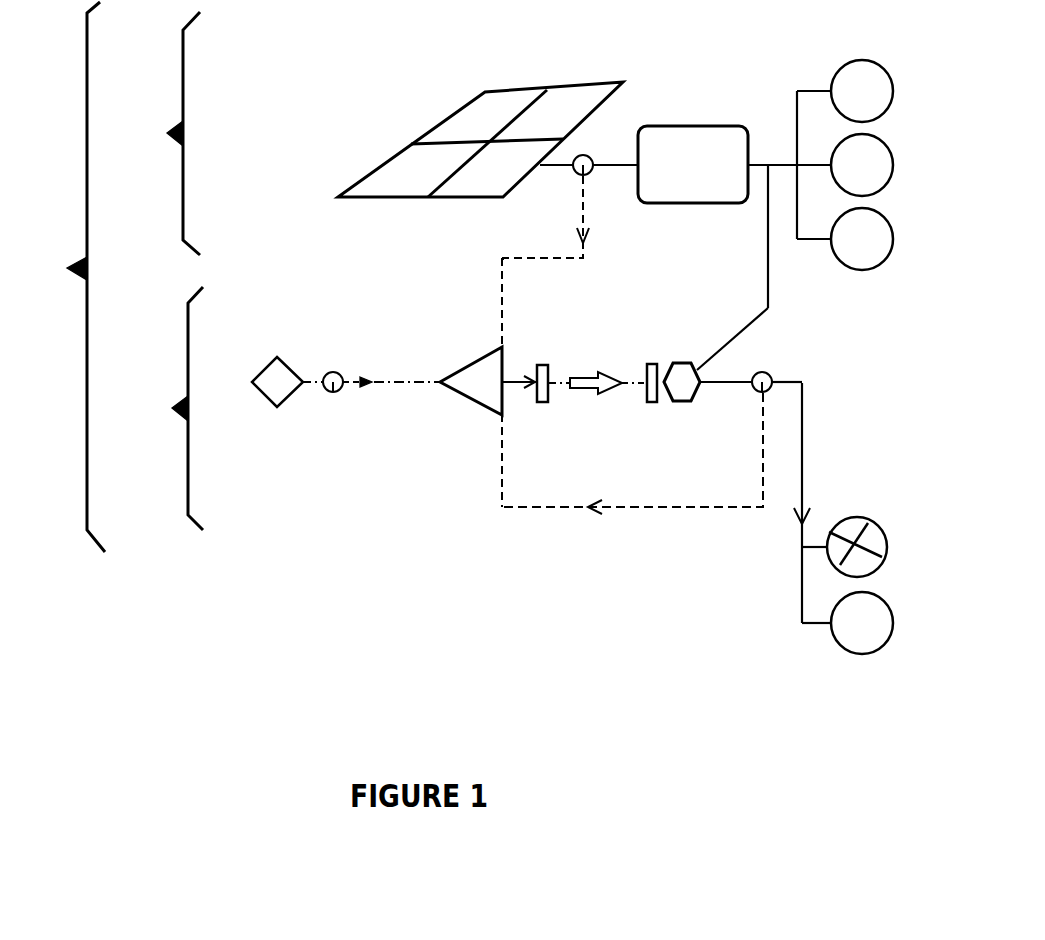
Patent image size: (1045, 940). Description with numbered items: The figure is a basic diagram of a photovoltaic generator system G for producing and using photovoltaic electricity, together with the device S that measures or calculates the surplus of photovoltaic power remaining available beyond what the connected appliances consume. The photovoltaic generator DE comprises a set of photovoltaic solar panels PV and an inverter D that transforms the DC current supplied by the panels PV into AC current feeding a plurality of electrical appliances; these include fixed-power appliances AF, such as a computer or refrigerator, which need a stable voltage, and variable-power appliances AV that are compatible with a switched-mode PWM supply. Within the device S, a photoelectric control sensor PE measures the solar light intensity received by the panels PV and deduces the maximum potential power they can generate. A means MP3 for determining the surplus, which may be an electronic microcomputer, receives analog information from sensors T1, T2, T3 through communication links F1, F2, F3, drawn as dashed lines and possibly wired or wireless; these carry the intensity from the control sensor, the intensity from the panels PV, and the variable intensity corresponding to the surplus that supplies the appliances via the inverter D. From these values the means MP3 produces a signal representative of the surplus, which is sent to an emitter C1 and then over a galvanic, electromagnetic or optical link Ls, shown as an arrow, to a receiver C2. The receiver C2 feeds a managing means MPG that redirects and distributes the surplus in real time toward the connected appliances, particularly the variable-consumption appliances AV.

The photovoltaic generator system G is at (60, 277).
The photovoltaic generator DE is at (158, 133).
The device for determining and managing the surplus S is at (168, 408).
The photovoltaic solar panels PV is at (425, 128).
The analog sensor T2 is at (592, 152).
The communication link F2 is at (546, 219).
The inverter D is at (672, 120).
The fixed-power electrical appliance AF is at (842, 58).
The variable-power electrical appliance AV is at (852, 515).
The photoelectric control sensor PE is at (272, 351).
The analog sensor T1 is at (323, 393).
The communication link F1 is at (349, 366).
The means for determining the surplus of available power MP3 is at (475, 350).
The emitter C1 is at (545, 410).
The link Ls is at (598, 398).
The receiver C2 is at (651, 408).
The means for managing the surplus of available power MPG is at (684, 347).
The analog sensor T3 is at (760, 370).
The communication link F3 is at (632, 467).